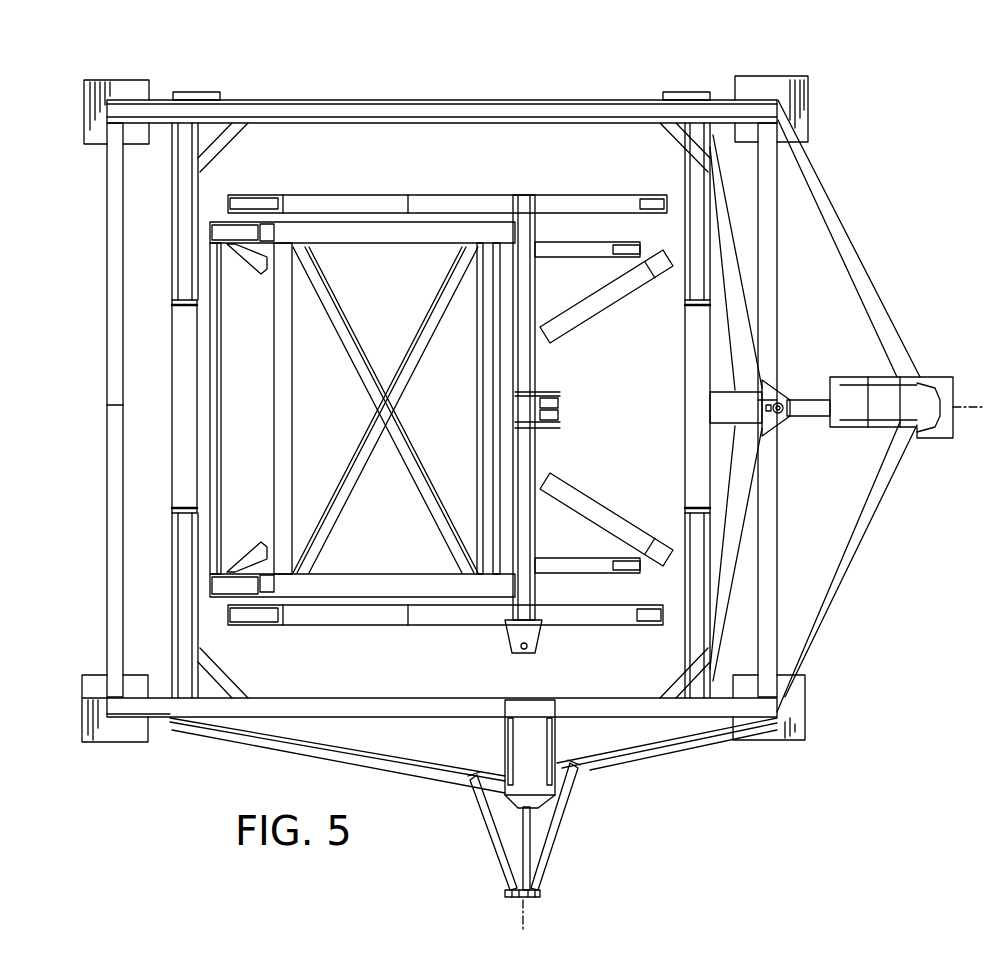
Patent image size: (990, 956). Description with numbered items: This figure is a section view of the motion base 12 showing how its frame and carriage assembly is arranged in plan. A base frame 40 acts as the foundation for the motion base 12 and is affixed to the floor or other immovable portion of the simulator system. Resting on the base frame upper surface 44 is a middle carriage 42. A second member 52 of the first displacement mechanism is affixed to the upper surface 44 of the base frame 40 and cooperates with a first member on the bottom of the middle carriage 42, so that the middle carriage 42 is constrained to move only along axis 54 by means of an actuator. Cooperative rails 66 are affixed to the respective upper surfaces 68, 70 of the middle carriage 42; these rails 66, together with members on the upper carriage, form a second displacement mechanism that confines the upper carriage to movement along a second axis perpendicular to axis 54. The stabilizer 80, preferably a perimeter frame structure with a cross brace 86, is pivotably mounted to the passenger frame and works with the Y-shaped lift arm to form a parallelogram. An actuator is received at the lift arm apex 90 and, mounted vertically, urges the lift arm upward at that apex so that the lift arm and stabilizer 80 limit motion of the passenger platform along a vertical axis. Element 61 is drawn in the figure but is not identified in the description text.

The motion base 12 is at (647, 782).
The base frame 40 is at (105, 623).
The middle carriage 42 is at (430, 697).
The base frame upper surface 44 is at (160, 718).
The second member 52 is at (162, 112).
The axis 54 is at (975, 408).
The jack stand 61 is at (523, 907).
The cooperative rails 66 is at (690, 178).
The upper surface of middle carriage 68 is at (180, 393).
The upper surface of middle carriage 70 is at (692, 383).
The stabilizer 80 is at (405, 545).
The cross brace 86 is at (395, 405).
The lift arm apex 90 is at (550, 392).